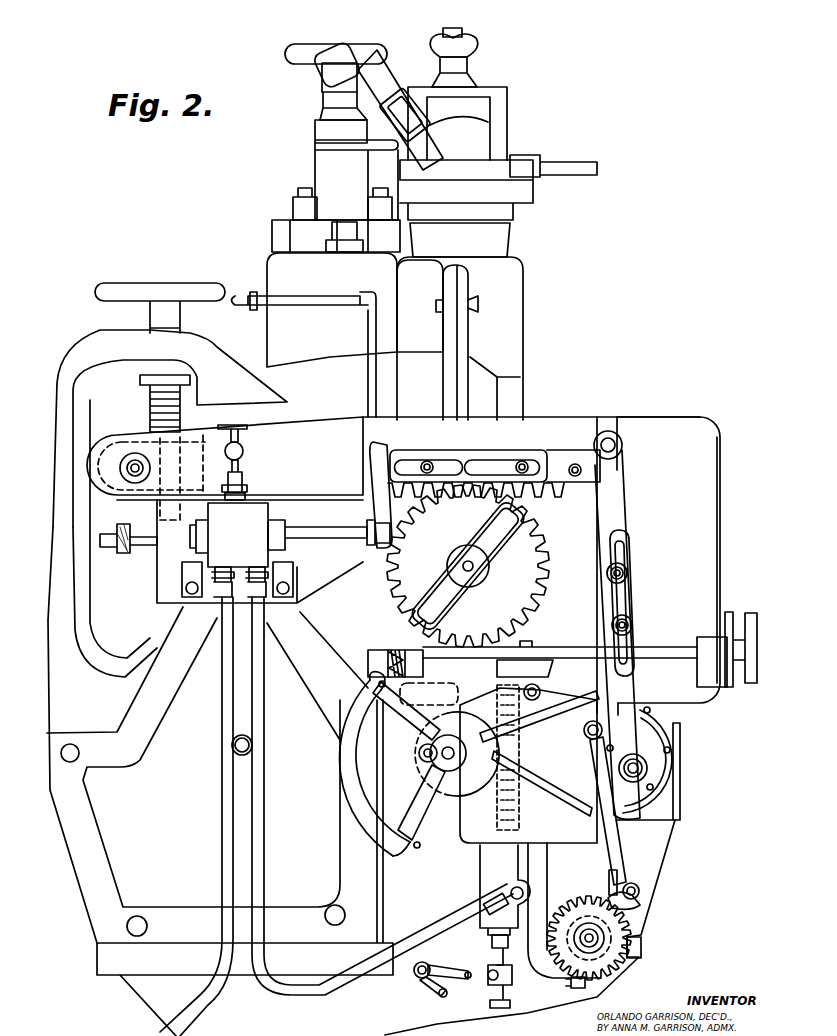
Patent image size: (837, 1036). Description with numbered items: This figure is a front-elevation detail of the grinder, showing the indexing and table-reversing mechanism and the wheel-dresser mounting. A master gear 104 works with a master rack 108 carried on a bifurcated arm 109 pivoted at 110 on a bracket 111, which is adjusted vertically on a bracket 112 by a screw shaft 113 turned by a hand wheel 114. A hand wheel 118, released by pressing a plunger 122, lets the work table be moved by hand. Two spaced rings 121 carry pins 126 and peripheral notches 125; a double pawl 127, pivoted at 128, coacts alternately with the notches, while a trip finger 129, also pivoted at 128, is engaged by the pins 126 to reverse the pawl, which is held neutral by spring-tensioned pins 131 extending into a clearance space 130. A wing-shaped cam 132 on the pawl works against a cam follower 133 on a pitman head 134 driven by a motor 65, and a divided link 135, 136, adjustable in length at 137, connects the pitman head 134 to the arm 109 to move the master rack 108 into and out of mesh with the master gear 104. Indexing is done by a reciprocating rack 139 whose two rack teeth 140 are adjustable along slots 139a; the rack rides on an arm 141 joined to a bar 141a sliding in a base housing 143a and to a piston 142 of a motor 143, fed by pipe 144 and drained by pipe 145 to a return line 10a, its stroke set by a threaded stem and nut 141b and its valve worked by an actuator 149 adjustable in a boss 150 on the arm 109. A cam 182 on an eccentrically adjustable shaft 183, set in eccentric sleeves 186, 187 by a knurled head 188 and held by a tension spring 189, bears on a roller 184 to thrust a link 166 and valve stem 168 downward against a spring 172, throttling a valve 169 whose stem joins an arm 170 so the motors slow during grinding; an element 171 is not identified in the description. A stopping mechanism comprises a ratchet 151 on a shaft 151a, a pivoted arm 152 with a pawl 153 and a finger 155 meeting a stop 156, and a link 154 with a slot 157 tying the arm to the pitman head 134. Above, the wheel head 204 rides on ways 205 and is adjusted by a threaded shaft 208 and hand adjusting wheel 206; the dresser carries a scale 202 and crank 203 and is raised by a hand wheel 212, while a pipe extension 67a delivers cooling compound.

The return line 10a is at (488, 893).
The motor 65 is at (666, 730).
The pipe extension 67a is at (312, 282).
The master gear 104 is at (540, 548).
The master rack 108 is at (585, 434).
The bifurcated arm 109 is at (225, 468).
The pivot 110 is at (144, 468).
The bracket 111 is at (152, 432).
The bracket 112 is at (205, 418).
The screw shaft 113 is at (150, 398).
The hand wheel 114 is at (215, 268).
The hand wheel 118 is at (345, 770).
The rings 121 is at (419, 752).
The plunger 122 is at (432, 762).
The notches 125 is at (440, 710).
The pins 126 is at (530, 800).
The double pawl 127 is at (520, 805).
The pivot 128 is at (584, 731).
The trip finger 129 is at (540, 778).
The clearance space 130 is at (497, 690).
The spring-tensioned pins 131 is at (468, 845).
The wing-shaped cam 132 is at (602, 657).
The cam follower 133 is at (620, 822).
The pitman head 134 is at (650, 765).
The divided link 135 is at (632, 597).
The divided link 136 is at (623, 462).
The length adjustment 137 is at (630, 570).
The reciprocating rack 139 is at (428, 432).
The slots 139a is at (500, 452).
The rack teeth 140 is at (520, 498).
The arm 141 is at (372, 480).
The bar 141a is at (370, 546).
The threaded stem and nut 141b is at (128, 560).
The piston 142 is at (318, 540).
The motor 143 is at (229, 535).
The base housing 143a is at (157, 595).
The pipe 144 is at (262, 712).
The pipe 145 is at (222, 735).
The actuator 149 is at (242, 468).
The boss 150 is at (244, 449).
The ratchet 151 is at (630, 920).
The shaft 151a is at (605, 938).
The pivoted arm 152 is at (638, 900).
The pawl 153 is at (640, 887).
The link 154 is at (610, 860).
The finger 155 is at (641, 957).
The stop 156 is at (575, 988).
The slot 157 is at (608, 878).
The link 166 is at (540, 861).
The valve stem 168 is at (495, 944).
The valve 169 is at (487, 860).
The arm 170 is at (480, 980).
The lever 171 is at (413, 977).
The spring 172 is at (448, 952).
The cam 182 is at (532, 655).
The shaft 183 is at (678, 628).
The roller 184 is at (542, 690).
The eccentric sleeve 186 is at (703, 637).
The eccentric sleeve 187 is at (368, 660).
The knurled head 188 is at (770, 602).
The tension spring 189 is at (405, 630).
The scale 202 is at (483, 118).
The crank 203 is at (355, 30).
The wheel head 204 is at (355, 310).
The ways 205 is at (380, 246).
The hand adjusting wheel 206 is at (290, 54).
The threaded shaft 208 is at (358, 205).
The hand wheel 212 is at (478, 45).